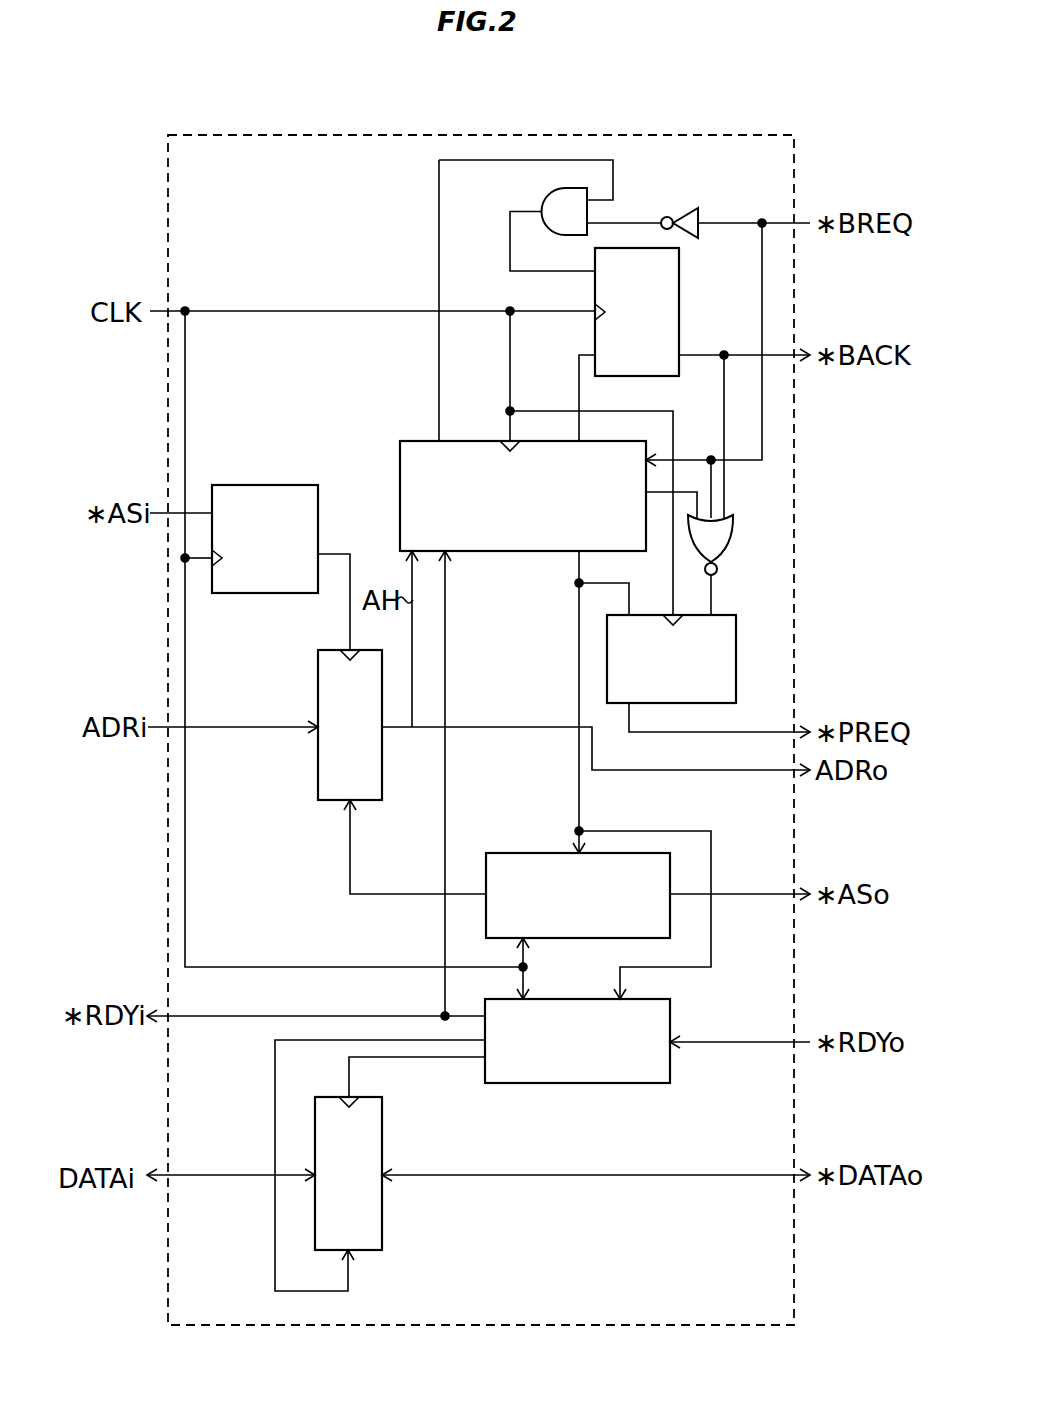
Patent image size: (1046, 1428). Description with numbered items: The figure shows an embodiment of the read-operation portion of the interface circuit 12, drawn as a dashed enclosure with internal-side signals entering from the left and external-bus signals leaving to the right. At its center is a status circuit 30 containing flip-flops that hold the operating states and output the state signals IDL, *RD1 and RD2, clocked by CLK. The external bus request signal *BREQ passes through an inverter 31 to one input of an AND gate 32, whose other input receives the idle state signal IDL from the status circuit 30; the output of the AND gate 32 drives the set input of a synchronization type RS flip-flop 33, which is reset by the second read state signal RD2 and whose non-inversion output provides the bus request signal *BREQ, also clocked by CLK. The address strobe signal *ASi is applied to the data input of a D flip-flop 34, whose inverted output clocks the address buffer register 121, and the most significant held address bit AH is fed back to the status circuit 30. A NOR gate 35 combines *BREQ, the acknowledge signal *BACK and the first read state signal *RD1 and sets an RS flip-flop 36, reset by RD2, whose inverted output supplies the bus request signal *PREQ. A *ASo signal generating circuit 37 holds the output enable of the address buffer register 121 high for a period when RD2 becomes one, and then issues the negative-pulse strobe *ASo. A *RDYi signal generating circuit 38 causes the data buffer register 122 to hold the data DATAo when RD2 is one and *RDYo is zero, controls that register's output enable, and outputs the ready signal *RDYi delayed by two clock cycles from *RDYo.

The interface circuit 12 is at (718, 135).
The status circuit 30 is at (420, 441).
The inverter 31 is at (683, 210).
The AND gate 32 is at (557, 197).
The synchronization type RS flip-flop 33 is at (680, 277).
The D flip-flop 34 is at (257, 485).
The NOR gate 35 is at (735, 540).
The RS flip-flop 36 is at (735, 630).
The *ASo signal generating circuit 37 is at (502, 853).
The *RDYi signal generating circuit 38 is at (615, 1075).
The address buffer register 121 is at (318, 780).
The data buffer register 122 is at (382, 1234).